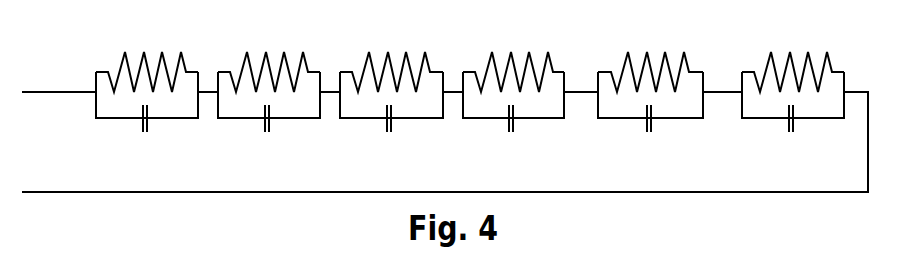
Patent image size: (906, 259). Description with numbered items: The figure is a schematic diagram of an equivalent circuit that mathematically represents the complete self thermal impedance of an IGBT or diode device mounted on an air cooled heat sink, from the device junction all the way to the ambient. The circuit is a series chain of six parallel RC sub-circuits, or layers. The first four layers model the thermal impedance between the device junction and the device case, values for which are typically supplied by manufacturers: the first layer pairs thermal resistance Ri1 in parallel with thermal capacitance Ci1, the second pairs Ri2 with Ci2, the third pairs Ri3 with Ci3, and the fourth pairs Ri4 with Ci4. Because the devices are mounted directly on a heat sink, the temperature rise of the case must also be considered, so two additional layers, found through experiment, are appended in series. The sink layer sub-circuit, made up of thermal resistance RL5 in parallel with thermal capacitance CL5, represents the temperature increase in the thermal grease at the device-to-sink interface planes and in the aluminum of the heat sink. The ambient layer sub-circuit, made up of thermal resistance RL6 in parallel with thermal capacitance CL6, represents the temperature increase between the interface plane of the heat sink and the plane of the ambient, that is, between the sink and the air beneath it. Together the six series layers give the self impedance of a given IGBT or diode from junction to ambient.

The thermal resistance of the first layer Ri1 is at (147, 51).
The thermal capacitance of the first layer Ci1 is at (139, 135).
The thermal resistance of the second layer Ri2 is at (269, 51).
The thermal capacitance of the second layer Ci2 is at (268, 135).
The thermal resistance of the third layer Ri3 is at (391, 51).
The thermal capacitance of the third layer Ci3 is at (387, 135).
The thermal resistance of the fourth layer Ri4 is at (513, 51).
The thermal capacitance of the fourth layer Ci4 is at (511, 135).
The sink layer thermal resistance RL5 is at (650, 54).
The sink layer thermal capacitance CL5 is at (650, 136).
The ambient layer thermal resistance RL6 is at (783, 51).
The ambient layer thermal capacitance CL6 is at (793, 136).